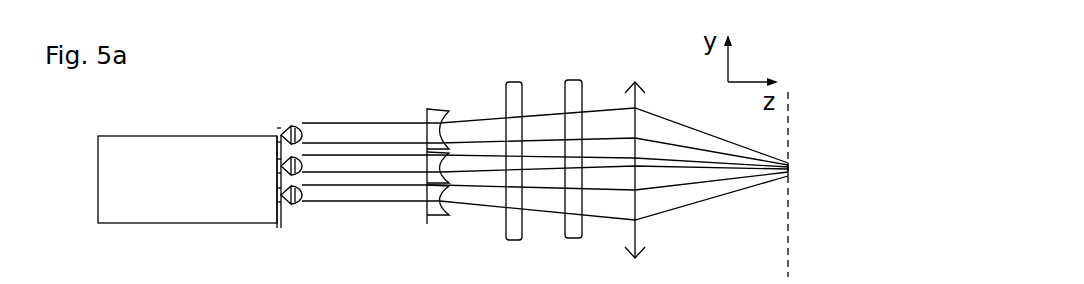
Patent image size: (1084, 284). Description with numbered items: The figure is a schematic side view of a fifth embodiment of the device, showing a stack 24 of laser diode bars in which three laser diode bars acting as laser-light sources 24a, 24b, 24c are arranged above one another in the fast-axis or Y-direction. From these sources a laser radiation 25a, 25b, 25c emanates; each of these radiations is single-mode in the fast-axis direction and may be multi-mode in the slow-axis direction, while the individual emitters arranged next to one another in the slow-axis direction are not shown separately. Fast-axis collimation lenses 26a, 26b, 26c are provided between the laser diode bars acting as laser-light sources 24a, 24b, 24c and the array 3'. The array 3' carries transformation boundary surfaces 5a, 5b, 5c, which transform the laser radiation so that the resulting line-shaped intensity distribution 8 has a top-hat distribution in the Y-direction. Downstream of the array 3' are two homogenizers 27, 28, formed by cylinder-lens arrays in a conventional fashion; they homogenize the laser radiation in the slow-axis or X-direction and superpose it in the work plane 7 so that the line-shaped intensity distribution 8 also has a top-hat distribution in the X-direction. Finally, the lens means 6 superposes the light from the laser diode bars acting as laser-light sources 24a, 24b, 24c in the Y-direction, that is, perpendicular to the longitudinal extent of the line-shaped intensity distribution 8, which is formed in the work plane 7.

The stack of laser diode bars 24 is at (156, 190).
The laser-light source 24a is at (280, 136).
The laser-light source 24b is at (280, 169).
The laser-light source 24c is at (281, 228).
The fast-axis collimation lens 26a is at (292, 127).
The fast-axis collimation lens 26b is at (299, 176).
The fast-axis collimation lens 26c is at (290, 199).
The laser radiation 25a is at (367, 130).
The laser radiation 25b is at (387, 163).
The laser radiation 25c is at (390, 194).
The array 3' is at (437, 195).
The transformation boundary surface 5a is at (443, 121).
The transformation boundary surface 5b is at (441, 166).
The transformation boundary surface 5c is at (437, 202).
The homogenizer 27 is at (513, 80).
The homogenizer 28 is at (572, 78).
The lens means 6 is at (633, 80).
The work plane 7 is at (787, 205).
The line-shaped intensity distribution 8 is at (795, 168).